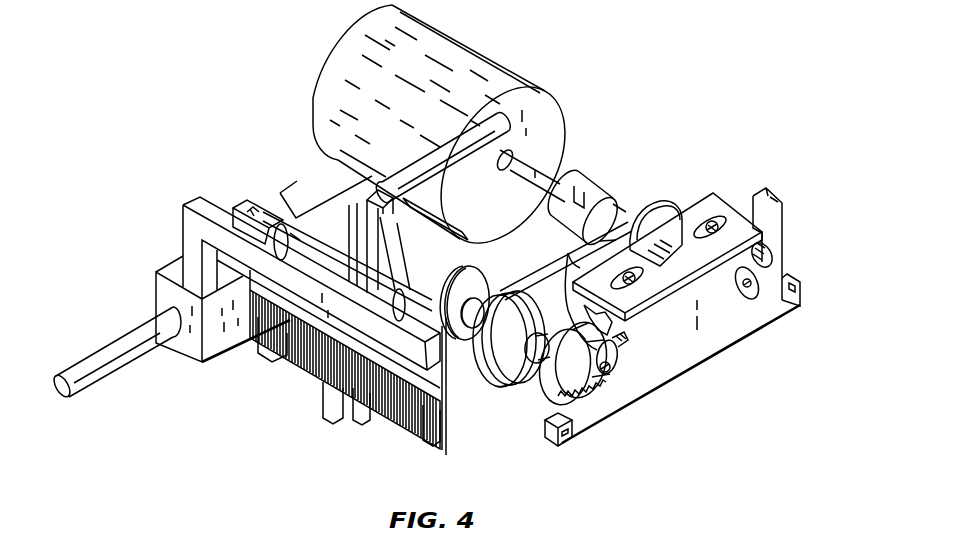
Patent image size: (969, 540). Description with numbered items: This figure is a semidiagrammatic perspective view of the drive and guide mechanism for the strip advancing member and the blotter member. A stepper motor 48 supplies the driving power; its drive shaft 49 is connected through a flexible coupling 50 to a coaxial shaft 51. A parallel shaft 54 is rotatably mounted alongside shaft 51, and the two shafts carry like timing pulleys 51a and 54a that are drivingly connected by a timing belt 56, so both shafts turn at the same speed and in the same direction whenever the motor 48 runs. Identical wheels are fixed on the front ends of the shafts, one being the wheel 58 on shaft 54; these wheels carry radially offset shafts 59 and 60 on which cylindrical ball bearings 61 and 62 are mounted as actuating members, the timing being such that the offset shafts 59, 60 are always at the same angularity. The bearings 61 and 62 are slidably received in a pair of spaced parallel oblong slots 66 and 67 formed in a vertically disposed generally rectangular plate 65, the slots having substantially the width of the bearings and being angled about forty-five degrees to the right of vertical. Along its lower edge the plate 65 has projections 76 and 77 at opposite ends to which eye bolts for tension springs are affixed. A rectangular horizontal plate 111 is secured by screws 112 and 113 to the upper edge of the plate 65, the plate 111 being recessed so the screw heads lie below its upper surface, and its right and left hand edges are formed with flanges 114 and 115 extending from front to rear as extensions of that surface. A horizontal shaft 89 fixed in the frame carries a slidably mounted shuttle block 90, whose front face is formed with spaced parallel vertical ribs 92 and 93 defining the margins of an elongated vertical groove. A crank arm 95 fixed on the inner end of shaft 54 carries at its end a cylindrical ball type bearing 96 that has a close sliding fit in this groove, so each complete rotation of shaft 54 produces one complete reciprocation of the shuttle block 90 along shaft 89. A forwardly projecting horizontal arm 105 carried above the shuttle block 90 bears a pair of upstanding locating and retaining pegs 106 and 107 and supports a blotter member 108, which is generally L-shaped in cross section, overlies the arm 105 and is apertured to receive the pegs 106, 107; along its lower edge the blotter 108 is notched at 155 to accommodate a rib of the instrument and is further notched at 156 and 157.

The stepper motor 48 is at (444, 46).
The horizontal shaft 89 is at (490, 130).
The drive shaft 49 is at (553, 165).
The flexible coupling 50 is at (585, 172).
The coaxial shaft 51 is at (630, 210).
The timing pulley 51a is at (668, 203).
The rectangular horizontal plate 111 is at (713, 210).
The screw 112 is at (645, 280).
The screw 113 is at (720, 222).
The flange 114 is at (783, 206).
The oblong slot 66 is at (773, 247).
The cylindrical ball bearing 61 is at (763, 265).
The projection 76 is at (802, 289).
The radially offset shaft 59 is at (757, 293).
The vertically disposed rectangular plate 65 is at (713, 330).
The oblong slot 67 is at (622, 335).
The radially offset shaft 60 is at (607, 378).
The cylindrical ball bearing 62 is at (607, 374).
The wheel 58 is at (560, 396).
The shaft 54 is at (477, 367).
The timing pulley 54a is at (523, 382).
The projection 77 is at (550, 438).
The blotter member 108 is at (447, 410).
The notch 157 is at (430, 438).
The horizontal arm 105 is at (390, 423).
The vertical rib 93 is at (358, 233).
The notch 155 is at (340, 408).
The notch 156 is at (293, 358).
The shuttle block 90 is at (220, 347).
The locating and retaining peg 106 is at (281, 228).
The cylindrical ball type bearing 96 is at (378, 190).
The vertical rib 92 is at (409, 206).
The locating and retaining peg 107 is at (404, 293).
The crank arm 95 is at (446, 253).
The timing belt 56 is at (577, 258).
The flange 115 is at (612, 322).